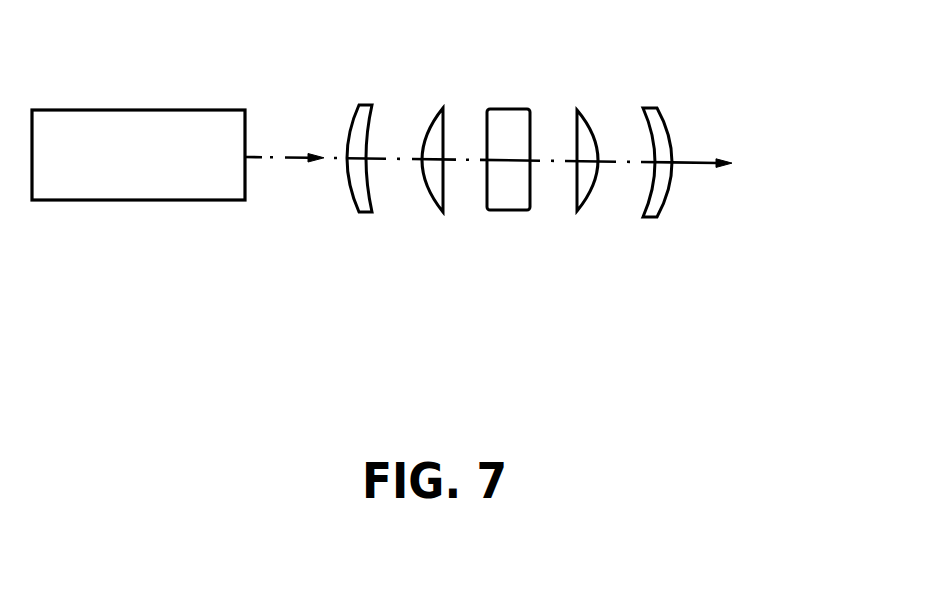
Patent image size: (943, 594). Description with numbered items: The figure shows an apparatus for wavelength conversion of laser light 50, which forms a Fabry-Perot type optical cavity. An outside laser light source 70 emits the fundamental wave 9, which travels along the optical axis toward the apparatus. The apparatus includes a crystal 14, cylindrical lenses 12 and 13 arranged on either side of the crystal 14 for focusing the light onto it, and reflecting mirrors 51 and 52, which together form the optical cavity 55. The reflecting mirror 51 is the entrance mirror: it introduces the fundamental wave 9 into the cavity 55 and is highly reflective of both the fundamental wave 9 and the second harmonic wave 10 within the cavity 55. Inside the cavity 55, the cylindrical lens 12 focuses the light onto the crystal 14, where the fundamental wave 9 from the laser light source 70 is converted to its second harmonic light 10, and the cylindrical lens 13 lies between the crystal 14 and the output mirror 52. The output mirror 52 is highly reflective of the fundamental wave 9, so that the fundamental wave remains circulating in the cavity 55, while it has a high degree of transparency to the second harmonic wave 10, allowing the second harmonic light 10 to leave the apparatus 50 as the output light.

The laser light source 70 is at (99, 122).
The fundamental wave 9 is at (262, 157).
The second harmonic light 10 is at (693, 163).
The cylindrical lens 12 is at (434, 118).
The cylindrical lens 13 is at (569, 118).
The crystal 14 is at (512, 203).
The apparatus for wavelength conversion of laser light 50 is at (478, 395).
The reflecting mirror 51 is at (358, 191).
The output mirror 52 is at (660, 213).
The optical cavity 55 is at (395, 265).